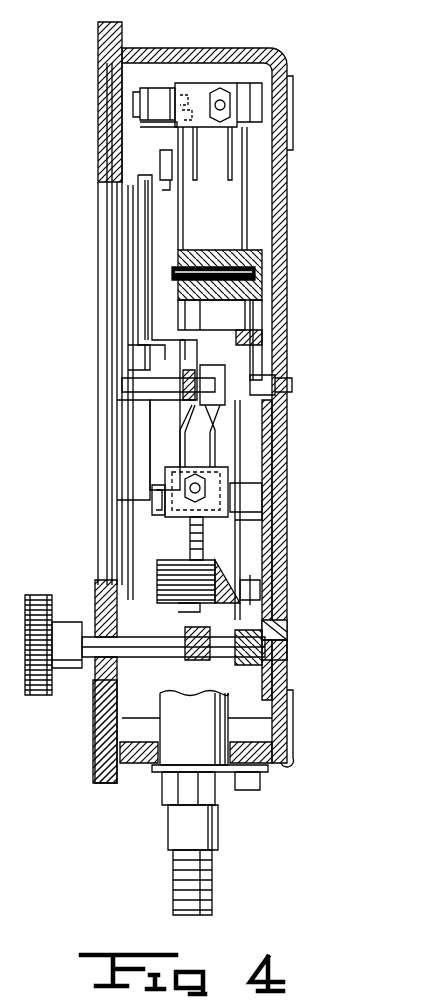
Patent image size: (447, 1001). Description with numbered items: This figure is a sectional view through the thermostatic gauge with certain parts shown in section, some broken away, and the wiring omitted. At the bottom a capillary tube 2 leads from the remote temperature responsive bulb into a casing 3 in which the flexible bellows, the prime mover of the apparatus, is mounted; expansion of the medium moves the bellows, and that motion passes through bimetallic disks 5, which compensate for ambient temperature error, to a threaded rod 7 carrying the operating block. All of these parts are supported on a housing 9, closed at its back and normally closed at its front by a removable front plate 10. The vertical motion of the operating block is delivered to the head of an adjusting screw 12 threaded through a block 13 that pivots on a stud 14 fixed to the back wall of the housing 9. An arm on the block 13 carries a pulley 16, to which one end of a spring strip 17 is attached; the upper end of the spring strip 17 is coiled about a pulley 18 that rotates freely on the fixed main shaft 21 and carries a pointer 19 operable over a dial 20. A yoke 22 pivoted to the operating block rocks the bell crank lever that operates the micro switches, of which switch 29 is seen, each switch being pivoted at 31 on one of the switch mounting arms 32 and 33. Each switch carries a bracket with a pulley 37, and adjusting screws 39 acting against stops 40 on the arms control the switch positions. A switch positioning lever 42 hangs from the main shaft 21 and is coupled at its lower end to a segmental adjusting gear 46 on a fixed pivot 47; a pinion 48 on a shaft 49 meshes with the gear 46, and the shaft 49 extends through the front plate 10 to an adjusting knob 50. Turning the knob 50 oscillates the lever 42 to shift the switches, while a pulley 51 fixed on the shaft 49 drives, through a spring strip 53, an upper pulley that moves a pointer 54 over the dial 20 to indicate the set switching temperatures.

The capillary tube 2 is at (215, 881).
The casing 3 is at (210, 771).
The bimetallic disks 5 is at (238, 575).
The threaded rod 7 is at (200, 540).
The housing 9 is at (287, 232).
The front plate 10 is at (98, 56).
The adjusting screw 12 is at (210, 487).
The block 13 is at (205, 476).
The stud 14 is at (288, 505).
The pulley 16 is at (185, 526).
The spring strip 17 is at (164, 445).
The pulley 18 is at (140, 344).
The pointer 19 is at (127, 254).
The dial 20 is at (137, 424).
The main shaft 21 is at (120, 383).
The yoke 22 is at (200, 436).
The switch 29 is at (203, 188).
The pivot 31 is at (237, 255).
The switch mounting arm 32 is at (240, 340).
The switch mounting arm 33 is at (260, 312).
The pulley 37 is at (150, 86).
The adjusting screw 39 is at (222, 90).
The stop 40 is at (250, 85).
The switch positioning lever 42 is at (240, 440).
The segmental adjusting gear 46 is at (262, 620).
The fixed pivot 47 is at (252, 595).
The pinion 48 is at (245, 665).
The shaft 49 is at (100, 690).
The adjusting knob 50 is at (45, 595).
The pulley 51 is at (188, 664).
The spring strip 53 is at (190, 620).
The pointer 54 is at (155, 221).